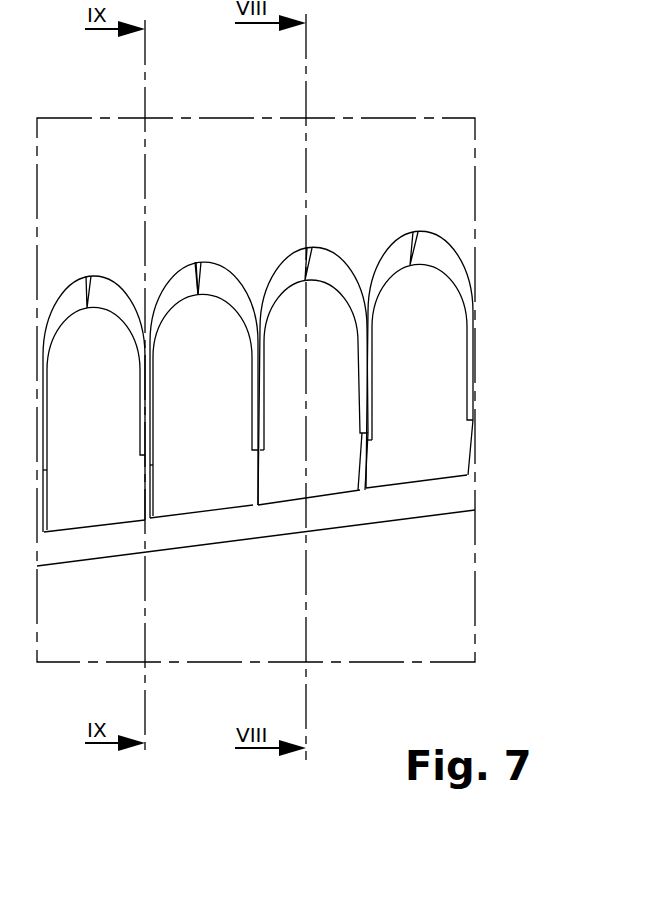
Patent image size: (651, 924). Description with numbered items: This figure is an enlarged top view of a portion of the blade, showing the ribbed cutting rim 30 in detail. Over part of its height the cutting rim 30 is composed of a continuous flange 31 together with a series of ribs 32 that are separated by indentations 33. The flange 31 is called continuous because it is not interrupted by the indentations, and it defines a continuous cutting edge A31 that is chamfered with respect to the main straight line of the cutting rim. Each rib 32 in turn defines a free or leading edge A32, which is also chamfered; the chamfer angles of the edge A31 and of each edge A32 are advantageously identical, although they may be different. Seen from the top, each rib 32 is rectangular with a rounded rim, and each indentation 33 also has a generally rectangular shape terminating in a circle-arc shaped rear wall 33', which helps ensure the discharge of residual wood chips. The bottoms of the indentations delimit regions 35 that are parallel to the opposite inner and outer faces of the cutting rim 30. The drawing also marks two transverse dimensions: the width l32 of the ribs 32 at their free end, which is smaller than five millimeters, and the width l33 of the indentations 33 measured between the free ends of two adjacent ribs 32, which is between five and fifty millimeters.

The cutting rim 30 is at (350, 548).
The continuous flange 31 is at (165, 538).
The rib 32 is at (145, 385).
The indentation 33 is at (309, 352).
The rear wall 33' is at (232, 248).
The region 35 is at (135, 495).
The width of the ribs l32 is at (183, 435).
The width of the indentations l33 is at (358, 368).
The continuous cutting edge A31 is at (210, 530).
The free edge A32 is at (258, 473).